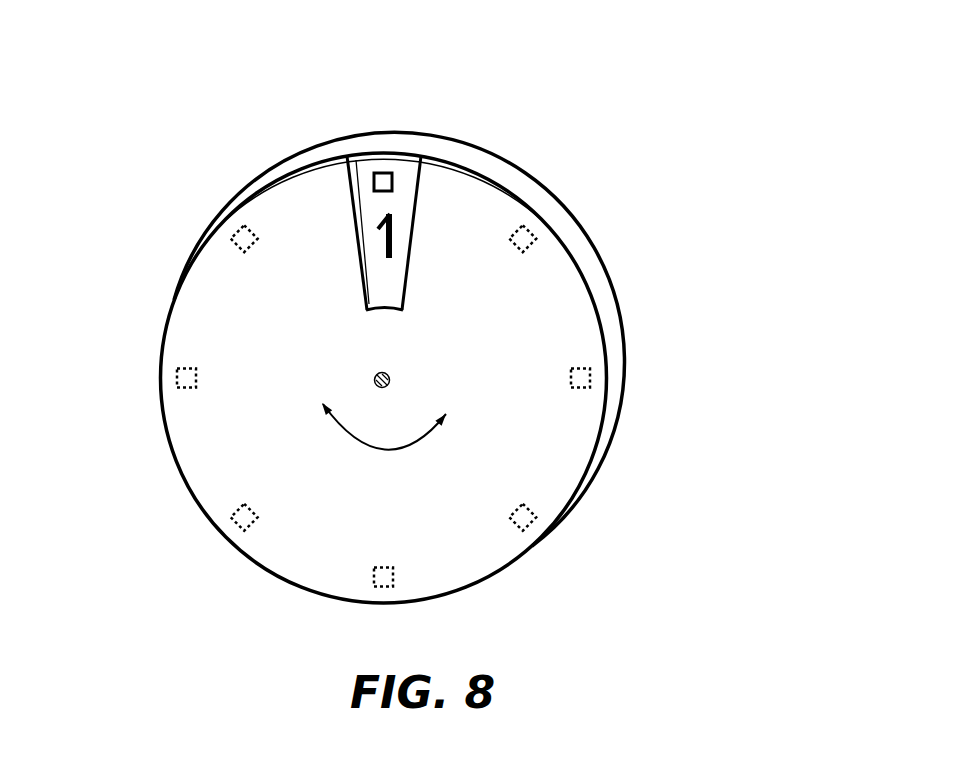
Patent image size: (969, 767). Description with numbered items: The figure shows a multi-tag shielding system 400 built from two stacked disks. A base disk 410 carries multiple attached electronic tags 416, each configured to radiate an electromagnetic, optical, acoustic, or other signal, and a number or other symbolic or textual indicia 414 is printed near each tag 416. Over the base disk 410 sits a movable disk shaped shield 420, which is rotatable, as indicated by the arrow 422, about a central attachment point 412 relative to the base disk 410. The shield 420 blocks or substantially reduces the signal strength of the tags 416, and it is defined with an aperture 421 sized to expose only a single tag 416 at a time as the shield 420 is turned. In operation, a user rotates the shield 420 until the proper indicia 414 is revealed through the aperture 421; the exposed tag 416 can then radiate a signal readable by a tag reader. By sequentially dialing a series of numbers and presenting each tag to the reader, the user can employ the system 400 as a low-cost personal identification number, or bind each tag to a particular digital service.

The multi-tag shielding system 400 is at (672, 104).
The base disk 410 is at (540, 200).
The attachment point 412 is at (375, 379).
The indicia 414 is at (390, 218).
The electronic tag 416 is at (382, 172).
The disk shaped shield 420 is at (550, 323).
The aperture 421 is at (361, 168).
The arrow 422 is at (340, 432).